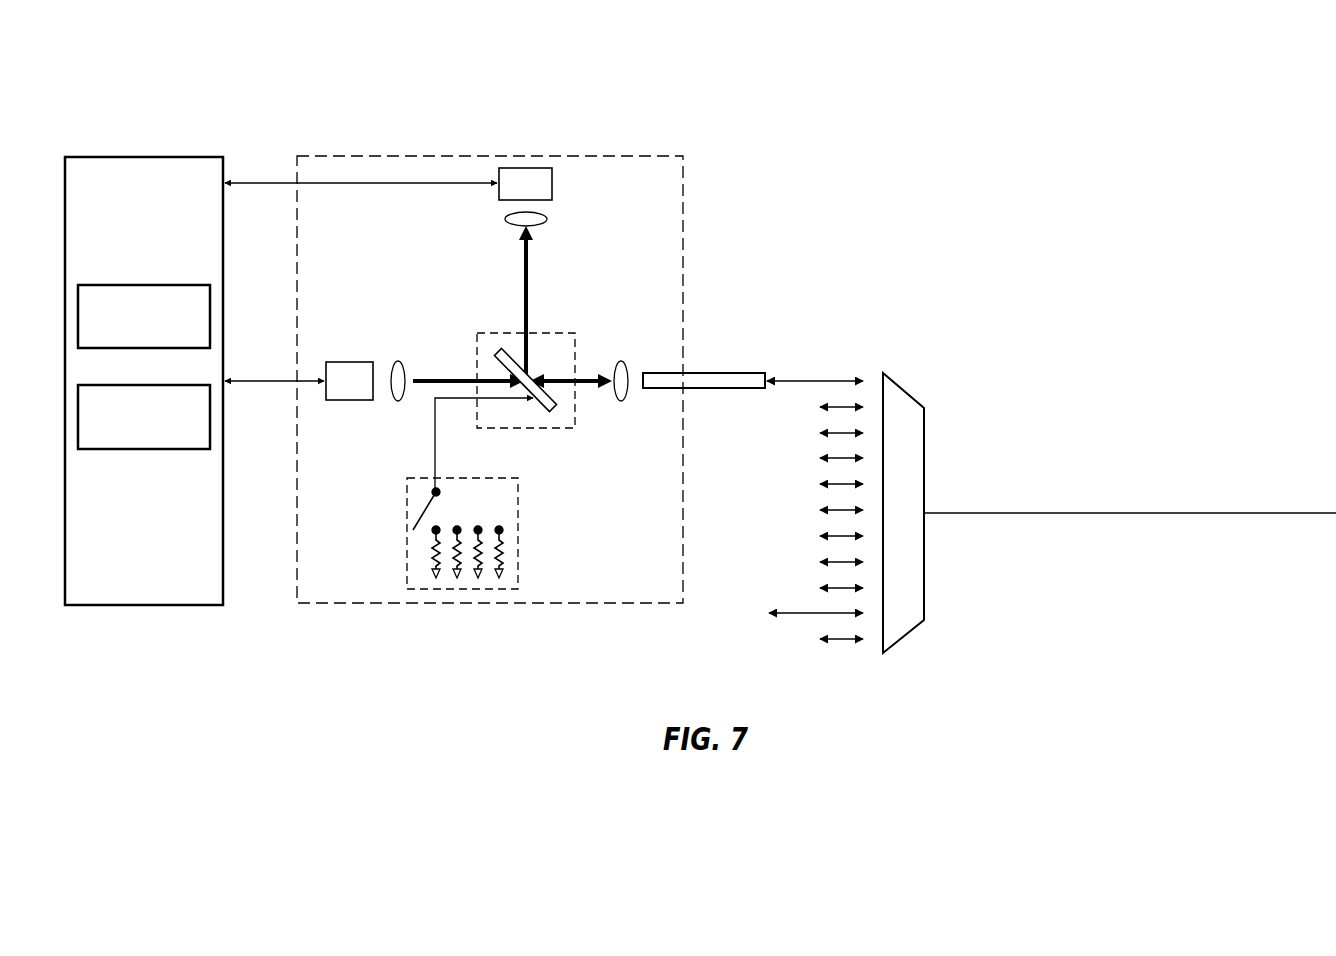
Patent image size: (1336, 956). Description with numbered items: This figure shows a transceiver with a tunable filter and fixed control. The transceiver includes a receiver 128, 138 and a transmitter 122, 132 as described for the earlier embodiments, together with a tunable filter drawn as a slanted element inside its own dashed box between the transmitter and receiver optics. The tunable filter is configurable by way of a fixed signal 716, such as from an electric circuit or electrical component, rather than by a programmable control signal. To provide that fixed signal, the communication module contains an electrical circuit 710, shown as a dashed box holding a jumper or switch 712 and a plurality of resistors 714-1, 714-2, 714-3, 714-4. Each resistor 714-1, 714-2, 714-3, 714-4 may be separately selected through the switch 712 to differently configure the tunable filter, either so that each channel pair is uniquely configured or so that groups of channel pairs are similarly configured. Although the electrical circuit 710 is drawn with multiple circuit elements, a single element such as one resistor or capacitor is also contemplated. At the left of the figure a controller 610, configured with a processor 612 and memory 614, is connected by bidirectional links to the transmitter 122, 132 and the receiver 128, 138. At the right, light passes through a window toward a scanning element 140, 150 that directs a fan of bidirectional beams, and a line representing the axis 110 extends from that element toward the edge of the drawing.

The receiver 128 is at (463, 158).
The receiver 138 is at (499, 180).
The transmitter 122 is at (386, 500).
The transmitter 132 is at (345, 400).
The scanning element 140 is at (945, 496).
The scanning element 150 is at (904, 391).
The axis 110 is at (1072, 513).
The controller 610 is at (144, 381).
The processor 612 is at (144, 316).
The memory 614 is at (144, 417).
The fixed signal 716 is at (435, 446).
The electrical circuit 710 is at (407, 478).
The jumper or switch 712 is at (421, 515).
The resistor 714-1 is at (439, 562).
The resistor 714-2 is at (460, 562).
The resistor 714-3 is at (481, 562).
The resistor 714-4 is at (502, 562).